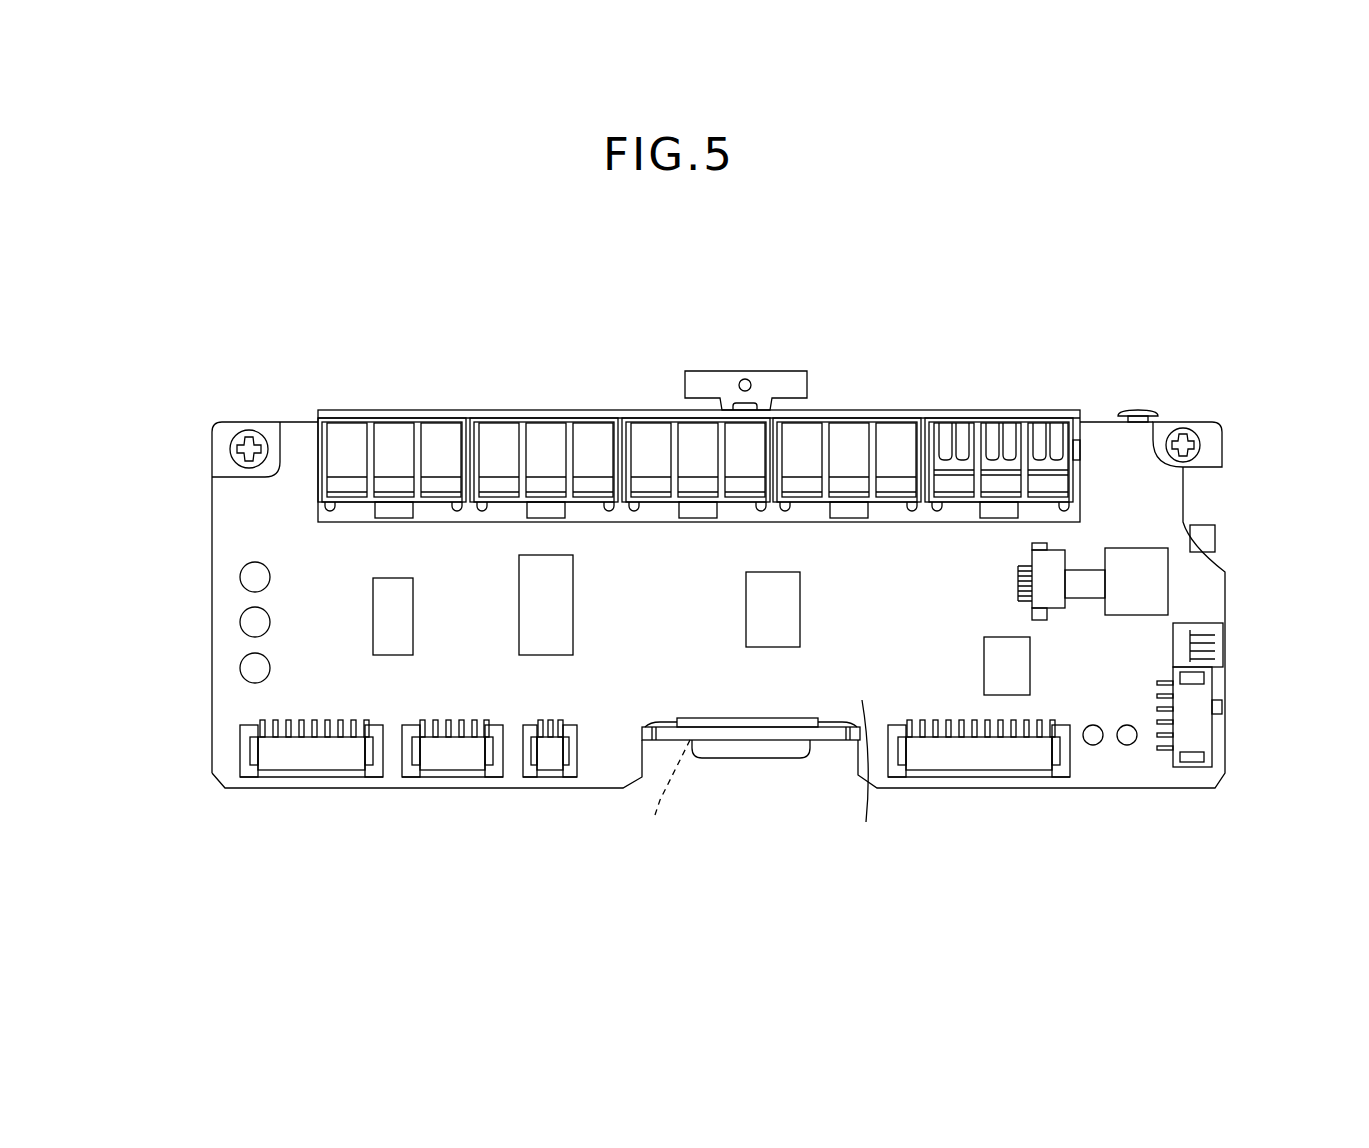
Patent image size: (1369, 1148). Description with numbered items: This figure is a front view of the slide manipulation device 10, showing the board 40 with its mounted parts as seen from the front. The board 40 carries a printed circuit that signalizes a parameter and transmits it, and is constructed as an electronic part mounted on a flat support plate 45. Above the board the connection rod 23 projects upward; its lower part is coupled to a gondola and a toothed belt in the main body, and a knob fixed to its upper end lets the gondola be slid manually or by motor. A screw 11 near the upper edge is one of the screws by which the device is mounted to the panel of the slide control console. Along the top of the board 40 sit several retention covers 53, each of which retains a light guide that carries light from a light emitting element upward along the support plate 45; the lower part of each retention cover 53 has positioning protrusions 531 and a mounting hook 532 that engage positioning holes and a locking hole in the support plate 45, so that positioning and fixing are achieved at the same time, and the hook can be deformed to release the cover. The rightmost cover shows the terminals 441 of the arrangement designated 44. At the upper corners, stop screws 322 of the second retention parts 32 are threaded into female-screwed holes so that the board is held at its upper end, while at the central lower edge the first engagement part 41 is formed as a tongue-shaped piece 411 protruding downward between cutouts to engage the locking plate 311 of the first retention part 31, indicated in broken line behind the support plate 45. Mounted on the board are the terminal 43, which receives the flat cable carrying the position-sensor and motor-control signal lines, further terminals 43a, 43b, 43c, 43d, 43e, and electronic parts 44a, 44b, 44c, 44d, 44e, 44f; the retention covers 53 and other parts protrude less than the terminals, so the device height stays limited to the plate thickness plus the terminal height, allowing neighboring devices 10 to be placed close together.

The slide manipulation device 10 is at (1118, 360).
The screw 11 is at (1140, 408).
The connection rod 23 is at (723, 372).
The first retention part 31 is at (659, 805).
The locking plate 311 is at (659, 790).
The second retention part 32 is at (711, 457).
The stop screw 322 is at (231, 450).
The board 40 is at (1225, 394).
The first engagement part 41 is at (751, 794).
The tongue-shaped piece 411 is at (760, 750).
The terminal 43 is at (1054, 598).
The terminal 43a is at (285, 770).
The terminal 43b is at (450, 770).
The terminal 43c is at (550, 770).
The terminal 43d is at (988, 770).
The terminal 43e is at (1195, 735).
The terminal block unit 44 is at (1033, 396).
The electronic part 44a is at (240, 668).
The electronic part 44b is at (390, 648).
The electronic part 44c is at (553, 648).
The electronic part 44d is at (775, 638).
The electronic part 44e is at (984, 662).
The electronic part 44f is at (1094, 746).
The terminal 441 is at (998, 432).
The support plate 45 is at (868, 775).
The retention cover 53 is at (400, 430).
The positioning protrusion 531 is at (330, 510).
The mounting hook 532 is at (394, 512).